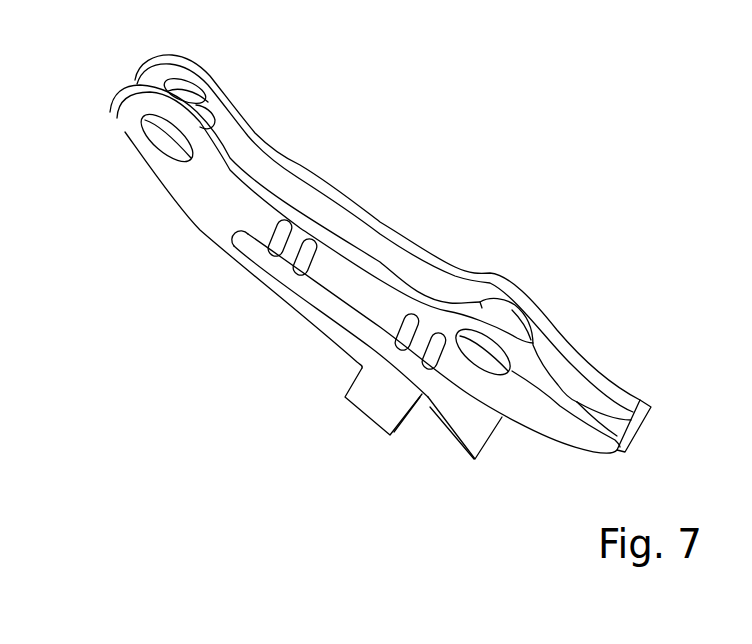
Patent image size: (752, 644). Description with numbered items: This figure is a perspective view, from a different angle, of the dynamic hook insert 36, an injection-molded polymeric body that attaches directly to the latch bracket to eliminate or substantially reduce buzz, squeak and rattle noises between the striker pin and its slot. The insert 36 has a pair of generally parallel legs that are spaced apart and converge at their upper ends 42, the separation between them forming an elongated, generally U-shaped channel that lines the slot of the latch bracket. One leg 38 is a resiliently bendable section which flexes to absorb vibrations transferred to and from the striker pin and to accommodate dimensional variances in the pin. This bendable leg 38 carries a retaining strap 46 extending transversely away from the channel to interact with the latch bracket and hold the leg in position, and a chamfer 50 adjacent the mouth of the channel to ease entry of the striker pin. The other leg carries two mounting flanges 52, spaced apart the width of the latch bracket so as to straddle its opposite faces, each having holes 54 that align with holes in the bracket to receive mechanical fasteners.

The dynamic hook insert 36 is at (548, 242).
The resiliently bendable leg 38 is at (343, 317).
The upper ends 42 is at (242, 243).
The retaining strap 46 is at (377, 427).
The chamfer 50 is at (485, 428).
The mounting flanges 52 is at (348, 248).
The holes 54 is at (190, 97).